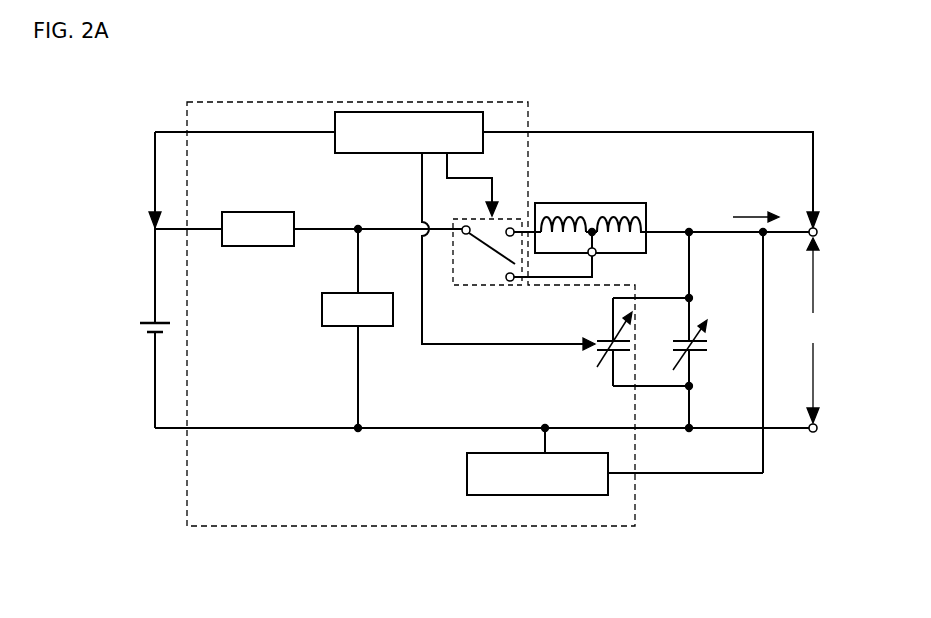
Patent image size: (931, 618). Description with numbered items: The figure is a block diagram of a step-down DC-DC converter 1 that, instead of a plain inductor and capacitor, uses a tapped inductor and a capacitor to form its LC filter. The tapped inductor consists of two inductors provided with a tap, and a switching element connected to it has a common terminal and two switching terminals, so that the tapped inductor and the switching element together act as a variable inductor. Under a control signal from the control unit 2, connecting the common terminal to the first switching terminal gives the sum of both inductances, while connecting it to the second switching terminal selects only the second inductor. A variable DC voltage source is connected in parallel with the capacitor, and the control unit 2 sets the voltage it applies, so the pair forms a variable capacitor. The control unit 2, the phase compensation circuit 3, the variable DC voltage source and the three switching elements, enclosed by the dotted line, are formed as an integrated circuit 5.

The step-down DC-DC converter 1 is at (754, 96).
The control unit 2 is at (335, 144).
The phase compensation circuit 3 is at (467, 473).
The integrated circuit 5 is at (187, 472).